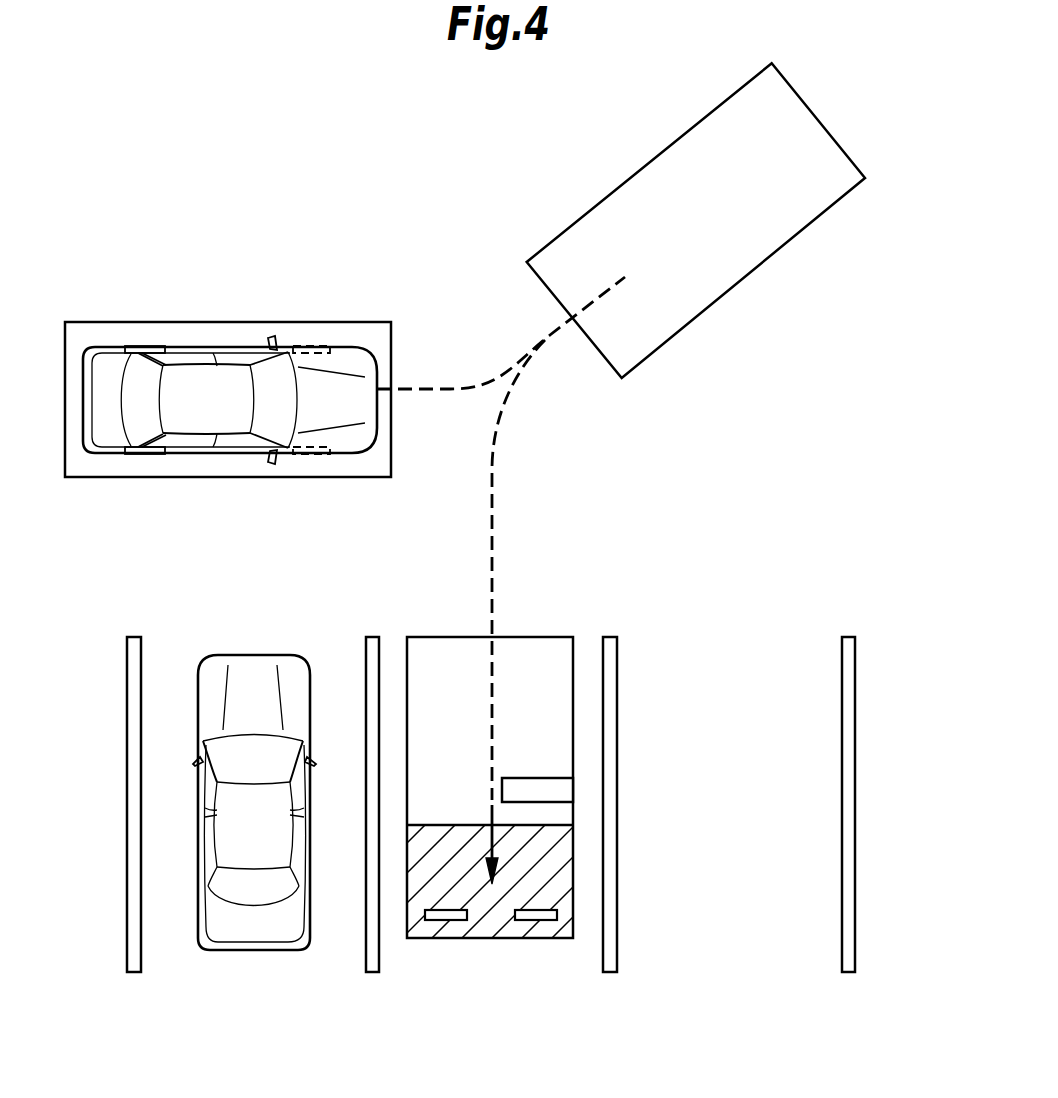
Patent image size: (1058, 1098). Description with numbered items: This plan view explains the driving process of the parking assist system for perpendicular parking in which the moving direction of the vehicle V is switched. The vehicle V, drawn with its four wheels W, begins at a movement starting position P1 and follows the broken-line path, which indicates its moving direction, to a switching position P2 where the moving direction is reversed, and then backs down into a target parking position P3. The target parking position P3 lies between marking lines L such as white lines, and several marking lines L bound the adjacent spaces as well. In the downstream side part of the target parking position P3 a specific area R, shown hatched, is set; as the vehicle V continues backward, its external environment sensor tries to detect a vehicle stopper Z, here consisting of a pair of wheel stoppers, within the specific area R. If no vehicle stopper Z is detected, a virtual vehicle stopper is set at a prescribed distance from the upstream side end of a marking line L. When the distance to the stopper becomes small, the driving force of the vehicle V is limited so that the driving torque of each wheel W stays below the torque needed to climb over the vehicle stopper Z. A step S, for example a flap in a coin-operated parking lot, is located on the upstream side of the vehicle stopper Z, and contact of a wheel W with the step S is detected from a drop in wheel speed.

The movement starting position P1 is at (237, 322).
The switching position P2 is at (663, 147).
The target parking position P3 is at (538, 637).
The vehicle V is at (205, 455).
The wheel W is at (140, 345).
The marking line L is at (141, 657).
The specific area R is at (453, 838).
The step S is at (540, 778).
The vehicle stopper Z is at (520, 921).